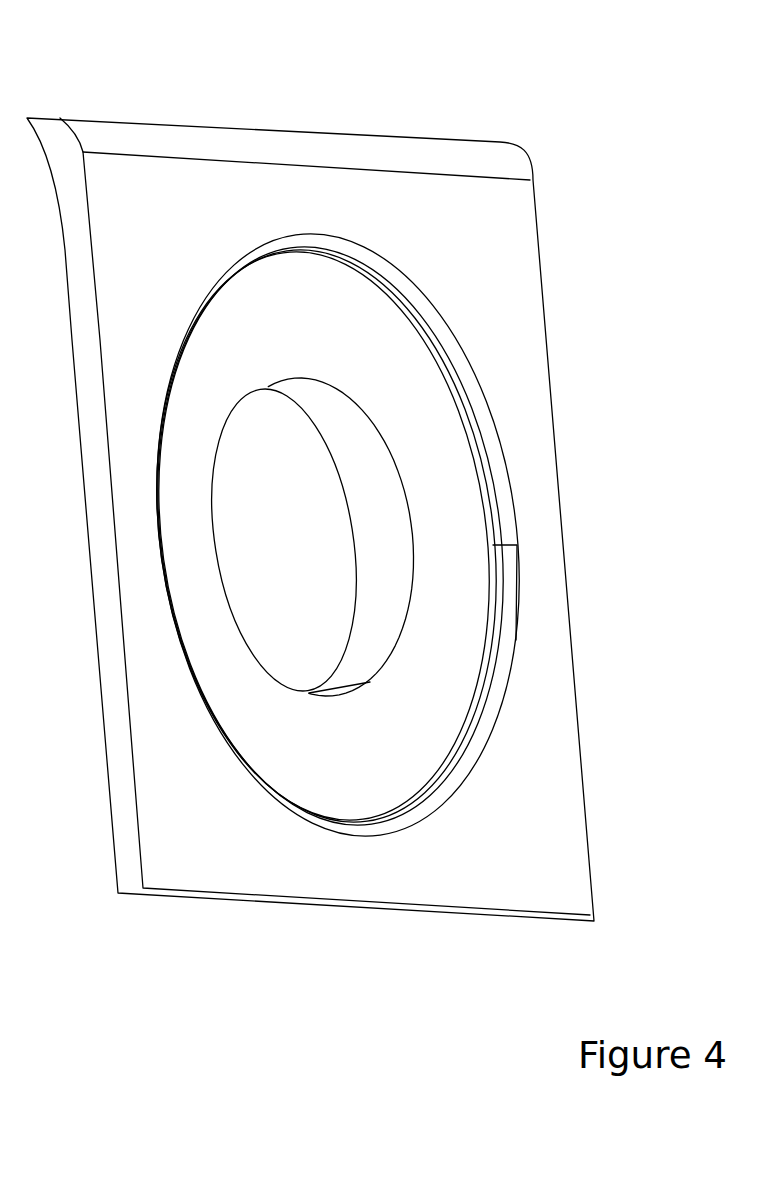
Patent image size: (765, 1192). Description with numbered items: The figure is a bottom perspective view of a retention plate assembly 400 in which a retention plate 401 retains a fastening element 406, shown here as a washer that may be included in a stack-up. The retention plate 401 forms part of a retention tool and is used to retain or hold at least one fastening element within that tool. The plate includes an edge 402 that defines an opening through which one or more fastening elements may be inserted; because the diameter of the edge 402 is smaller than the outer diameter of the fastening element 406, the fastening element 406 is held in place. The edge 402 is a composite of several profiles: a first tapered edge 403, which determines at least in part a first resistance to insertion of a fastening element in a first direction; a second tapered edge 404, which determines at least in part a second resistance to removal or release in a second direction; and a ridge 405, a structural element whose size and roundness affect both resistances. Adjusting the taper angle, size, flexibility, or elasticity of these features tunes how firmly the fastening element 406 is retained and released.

The mounting plate assembly 400 is at (512, 93).
The retention plate 401 is at (463, 230).
The edge 402 is at (480, 398).
The first tapered edge 403 is at (507, 526).
The second tapered edge 404 is at (490, 617).
The ridge 405 is at (498, 587).
The fastening element 406 is at (432, 465).